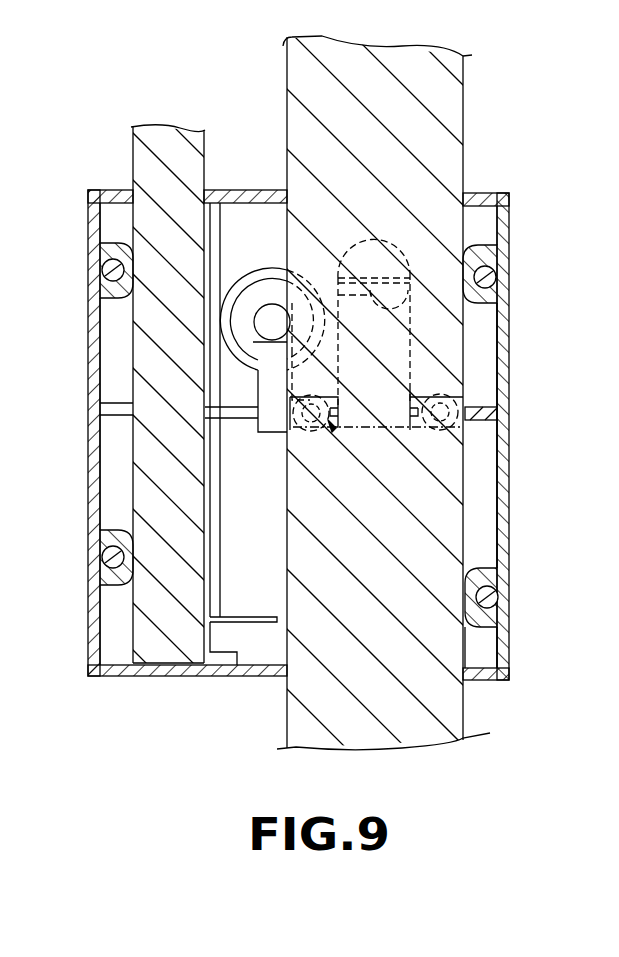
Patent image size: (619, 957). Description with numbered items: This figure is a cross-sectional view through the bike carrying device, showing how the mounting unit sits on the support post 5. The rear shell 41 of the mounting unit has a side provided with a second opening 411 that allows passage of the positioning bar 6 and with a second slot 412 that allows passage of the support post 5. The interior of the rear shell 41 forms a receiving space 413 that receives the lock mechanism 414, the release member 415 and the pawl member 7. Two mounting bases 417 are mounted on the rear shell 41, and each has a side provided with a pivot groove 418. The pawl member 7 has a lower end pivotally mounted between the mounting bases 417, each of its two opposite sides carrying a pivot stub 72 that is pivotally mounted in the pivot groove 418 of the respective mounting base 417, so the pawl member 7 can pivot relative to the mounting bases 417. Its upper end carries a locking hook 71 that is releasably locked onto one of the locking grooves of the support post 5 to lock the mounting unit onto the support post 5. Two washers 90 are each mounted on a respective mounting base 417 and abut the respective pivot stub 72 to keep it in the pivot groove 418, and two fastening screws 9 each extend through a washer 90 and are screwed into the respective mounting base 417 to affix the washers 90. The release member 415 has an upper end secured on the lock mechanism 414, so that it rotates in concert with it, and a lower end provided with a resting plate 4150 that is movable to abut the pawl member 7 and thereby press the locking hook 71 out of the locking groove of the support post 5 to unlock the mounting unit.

The support post 5 is at (447, 112).
The positioning bar 6 is at (148, 166).
The rear shell 41 is at (500, 230).
The second opening 411 is at (207, 197).
The second slot 412 is at (478, 188).
The receiving space 413 is at (482, 650).
The lock mechanism 414 is at (255, 325).
The release member 415 is at (260, 372).
The resting plate 4150 is at (142, 556).
The mounting base 417 is at (420, 385).
The pivot groove 418 is at (332, 425).
The pawl member 7 is at (410, 347).
The locking hook 71 is at (410, 317).
The pivot stub 72 is at (513, 527).
The fastening screw 9 is at (450, 407).
The washer 90 is at (445, 425).